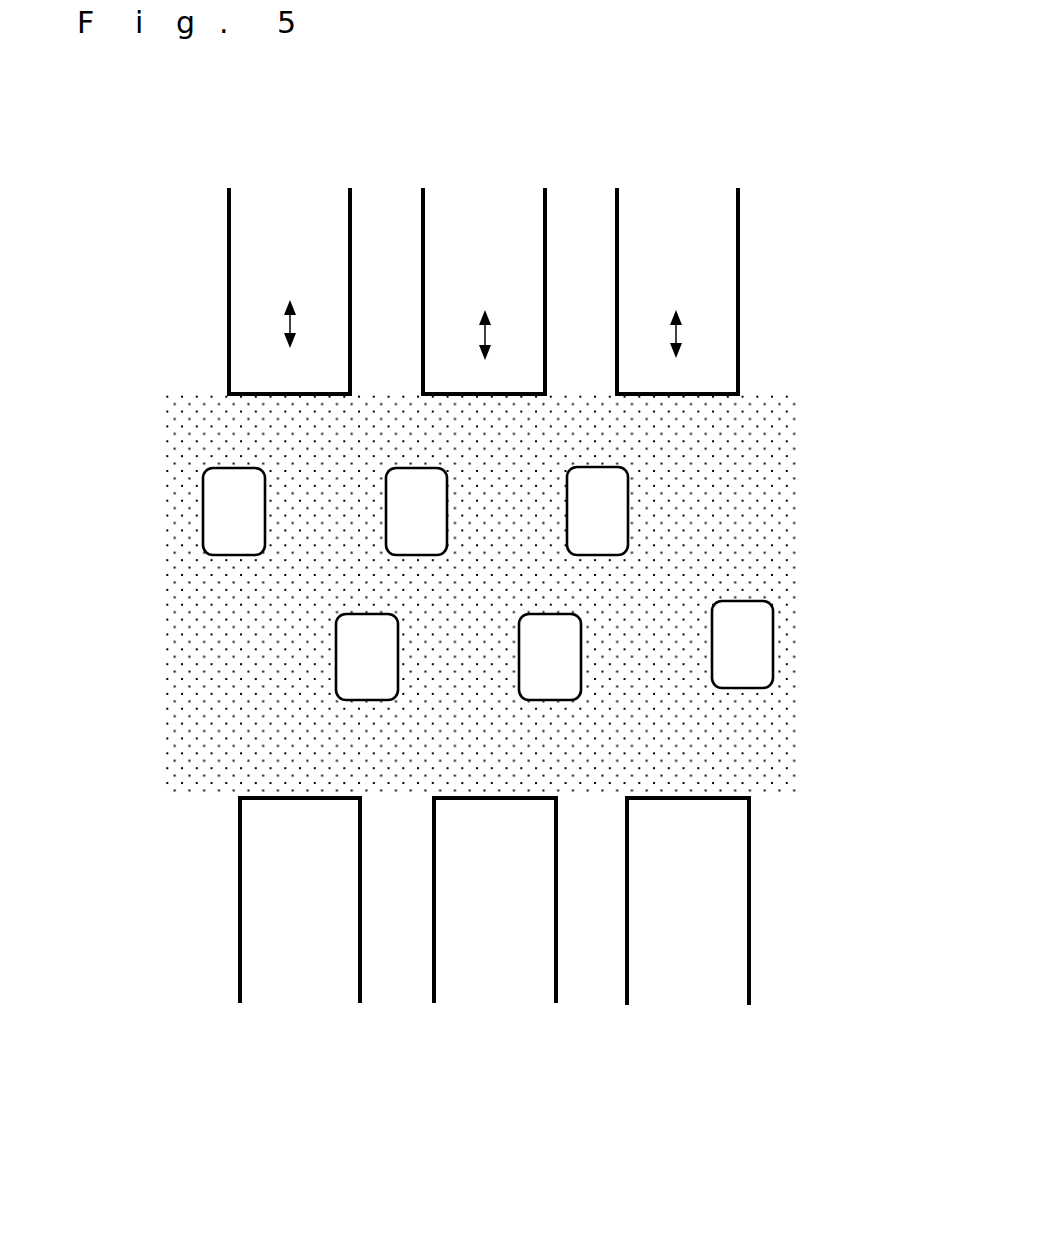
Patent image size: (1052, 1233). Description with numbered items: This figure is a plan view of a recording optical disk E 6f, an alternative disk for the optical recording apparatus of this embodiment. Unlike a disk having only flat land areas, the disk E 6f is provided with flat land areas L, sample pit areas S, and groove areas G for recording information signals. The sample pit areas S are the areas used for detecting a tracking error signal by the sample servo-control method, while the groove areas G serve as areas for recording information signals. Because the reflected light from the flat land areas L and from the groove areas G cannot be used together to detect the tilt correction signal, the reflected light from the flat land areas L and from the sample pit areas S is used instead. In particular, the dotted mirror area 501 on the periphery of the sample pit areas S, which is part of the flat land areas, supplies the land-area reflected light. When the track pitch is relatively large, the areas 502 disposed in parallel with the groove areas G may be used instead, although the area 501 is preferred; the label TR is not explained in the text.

The recording optical disk E 6f is at (683, 133).
The mirror area 501 is at (93, 798).
The areas disposed in parallel with the groove areas 502 is at (349, 177).
The sample pit areas S is at (567, 628).
The groove areas G is at (489, 596).
The flat land areas L is at (487, 597).
The transfer direction TR is at (477, 316).